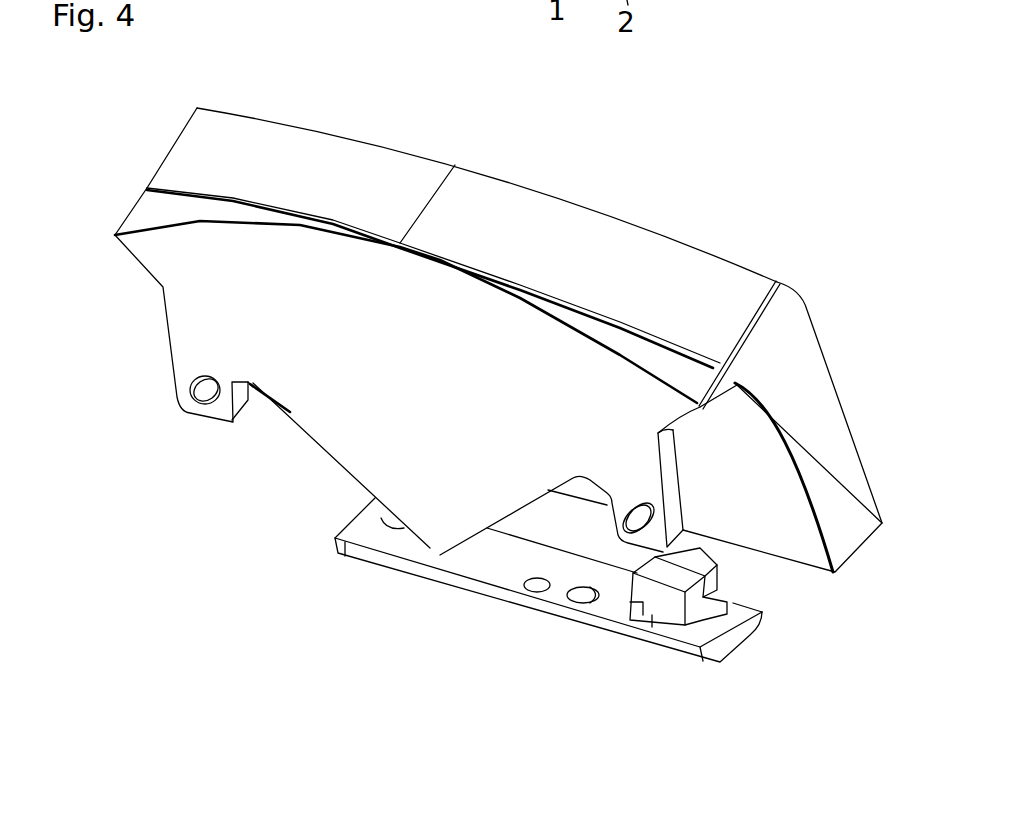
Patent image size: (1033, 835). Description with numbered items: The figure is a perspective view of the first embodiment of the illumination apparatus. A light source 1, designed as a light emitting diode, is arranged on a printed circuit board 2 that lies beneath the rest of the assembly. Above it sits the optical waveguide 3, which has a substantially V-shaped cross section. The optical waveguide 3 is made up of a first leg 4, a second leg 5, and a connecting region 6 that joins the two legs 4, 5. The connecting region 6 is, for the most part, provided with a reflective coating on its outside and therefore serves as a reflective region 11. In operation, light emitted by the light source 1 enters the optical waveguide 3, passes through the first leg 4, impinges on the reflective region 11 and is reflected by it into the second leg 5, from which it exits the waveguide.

The light source 1 is at (430, 548).
The printed circuit board 2 is at (503, 560).
The optical waveguide 3 is at (165, 463).
The first leg 4 is at (306, 452).
The second leg 5 is at (849, 377).
The connecting region 6 is at (704, 234).
The reflective region 11 is at (348, 170).